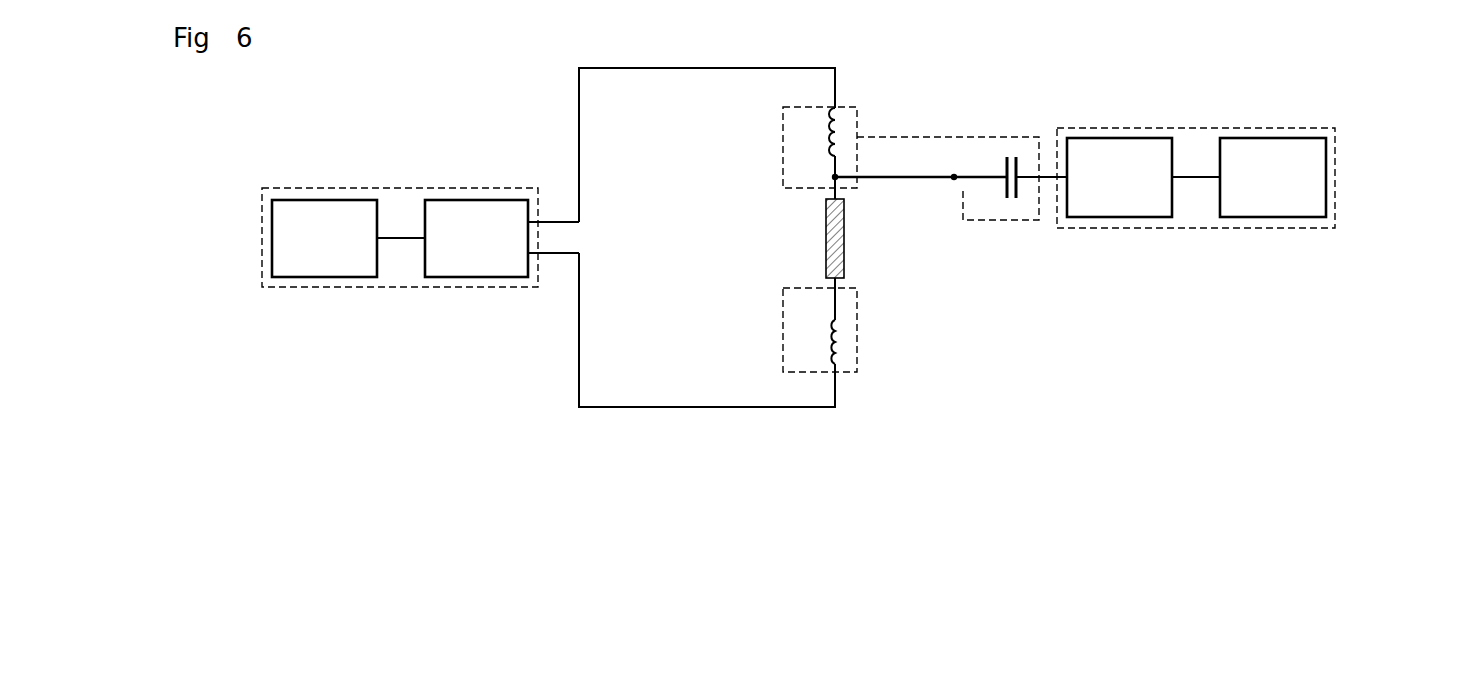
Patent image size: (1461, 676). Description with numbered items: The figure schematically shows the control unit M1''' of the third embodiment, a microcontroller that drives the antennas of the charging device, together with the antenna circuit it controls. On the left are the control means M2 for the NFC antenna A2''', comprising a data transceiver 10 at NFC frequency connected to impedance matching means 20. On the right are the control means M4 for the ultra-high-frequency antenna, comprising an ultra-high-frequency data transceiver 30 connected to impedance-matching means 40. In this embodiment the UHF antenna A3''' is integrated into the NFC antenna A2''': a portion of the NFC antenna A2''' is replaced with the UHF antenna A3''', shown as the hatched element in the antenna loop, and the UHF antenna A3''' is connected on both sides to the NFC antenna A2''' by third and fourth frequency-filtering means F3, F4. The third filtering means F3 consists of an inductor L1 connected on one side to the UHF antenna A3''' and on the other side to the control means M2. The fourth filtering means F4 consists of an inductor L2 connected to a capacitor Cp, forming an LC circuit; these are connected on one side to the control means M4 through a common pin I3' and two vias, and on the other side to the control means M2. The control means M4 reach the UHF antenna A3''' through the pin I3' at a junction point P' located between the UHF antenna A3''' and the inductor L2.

The control means M2 is at (262, 222).
The data transceiver 10 is at (272, 249).
The impedance matching means 20 is at (478, 200).
The inductor L2 is at (820, 147).
The inductor L1 is at (820, 330).
The fourth frequency-filtering means F4 is at (843, 102).
The third frequency-filtering means F3 is at (840, 372).
The pin I3' is at (902, 130).
The junction point P' is at (890, 246).
The UHF antenna A3''' is at (895, 291).
The NFC antenna A2''' is at (884, 431).
The capacitor Cp is at (1010, 200).
The control unit M1''' is at (780, 224).
The ultra-high-frequency data transceiver 30 is at (1118, 218).
The impedance-matching means 40 is at (1272, 218).
The control means M4 is at (1335, 195).